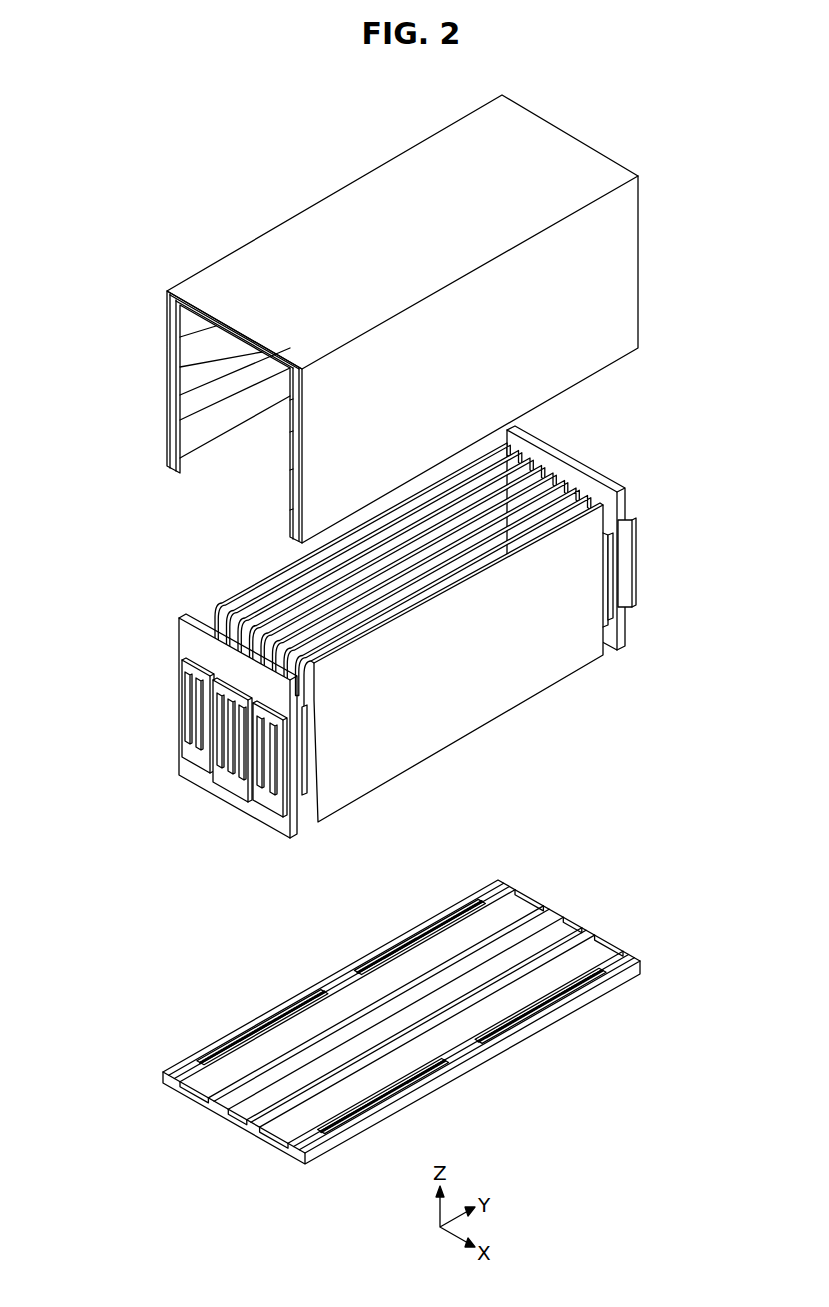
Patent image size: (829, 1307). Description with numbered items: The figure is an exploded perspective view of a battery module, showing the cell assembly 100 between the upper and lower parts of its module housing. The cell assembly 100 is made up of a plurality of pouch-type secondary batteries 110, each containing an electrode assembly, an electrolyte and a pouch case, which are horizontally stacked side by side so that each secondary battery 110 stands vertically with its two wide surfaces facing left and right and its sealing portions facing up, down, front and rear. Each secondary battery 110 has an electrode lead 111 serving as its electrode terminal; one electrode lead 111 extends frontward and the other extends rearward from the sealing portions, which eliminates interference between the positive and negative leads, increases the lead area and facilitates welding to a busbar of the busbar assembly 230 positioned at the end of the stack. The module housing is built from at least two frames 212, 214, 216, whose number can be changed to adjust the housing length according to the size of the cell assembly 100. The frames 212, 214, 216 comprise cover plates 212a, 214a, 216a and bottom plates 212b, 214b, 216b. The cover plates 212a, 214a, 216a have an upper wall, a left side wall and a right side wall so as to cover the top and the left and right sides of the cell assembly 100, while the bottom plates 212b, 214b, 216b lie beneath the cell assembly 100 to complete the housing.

The cell assembly 100 is at (251, 568).
The secondary battery 110 is at (505, 701).
The electrode lead 111 is at (290, 778).
The frame 212 is at (411, 629).
The cover plate 212a is at (370, 319).
The bottom plate 212b is at (370, 1022).
The frame 214 is at (411, 629).
The cover plate 214a is at (370, 319).
The bottom plate 214b is at (370, 1022).
The frame 216 is at (672, 878).
The cover plate 216a is at (281, 203).
The bottom plate 216b is at (282, 977).
The busbar assembly 230 is at (167, 638).